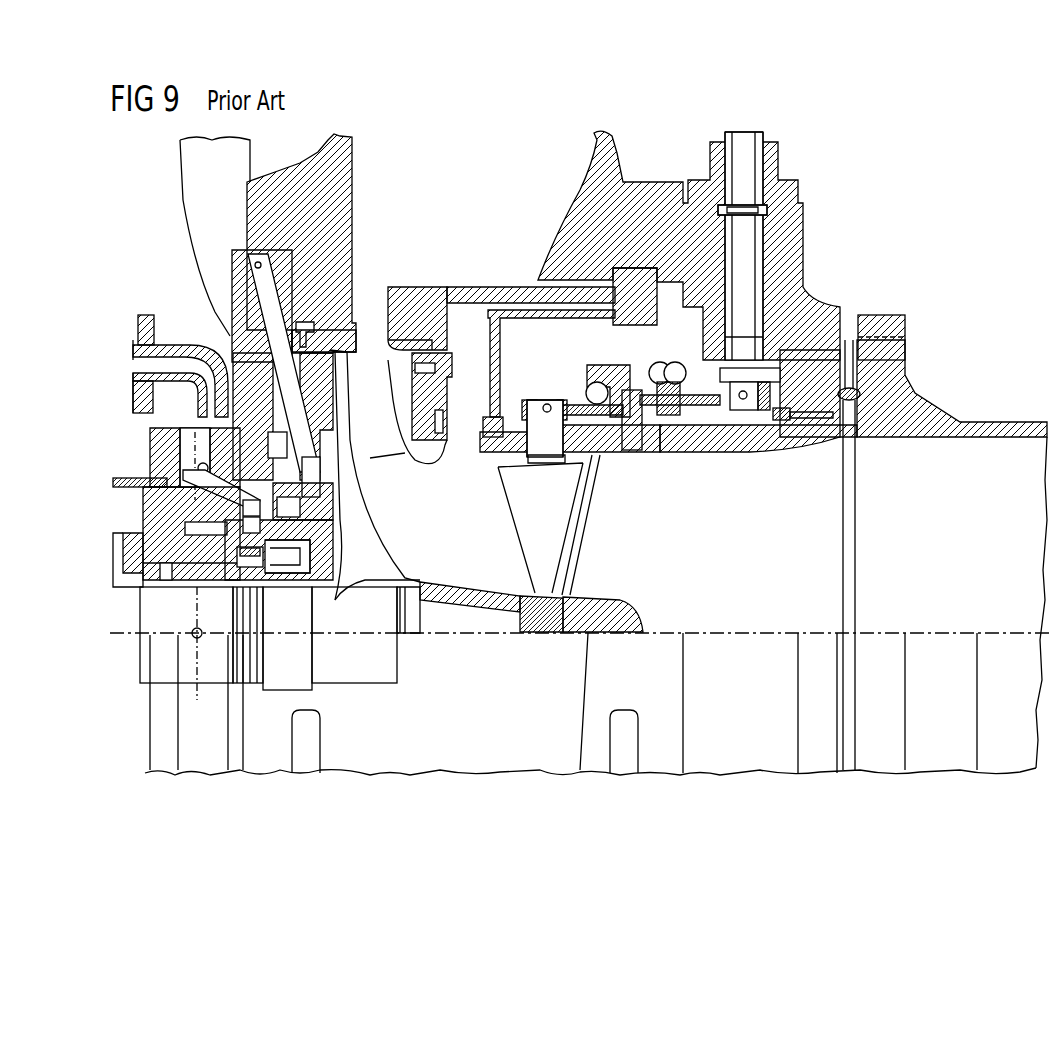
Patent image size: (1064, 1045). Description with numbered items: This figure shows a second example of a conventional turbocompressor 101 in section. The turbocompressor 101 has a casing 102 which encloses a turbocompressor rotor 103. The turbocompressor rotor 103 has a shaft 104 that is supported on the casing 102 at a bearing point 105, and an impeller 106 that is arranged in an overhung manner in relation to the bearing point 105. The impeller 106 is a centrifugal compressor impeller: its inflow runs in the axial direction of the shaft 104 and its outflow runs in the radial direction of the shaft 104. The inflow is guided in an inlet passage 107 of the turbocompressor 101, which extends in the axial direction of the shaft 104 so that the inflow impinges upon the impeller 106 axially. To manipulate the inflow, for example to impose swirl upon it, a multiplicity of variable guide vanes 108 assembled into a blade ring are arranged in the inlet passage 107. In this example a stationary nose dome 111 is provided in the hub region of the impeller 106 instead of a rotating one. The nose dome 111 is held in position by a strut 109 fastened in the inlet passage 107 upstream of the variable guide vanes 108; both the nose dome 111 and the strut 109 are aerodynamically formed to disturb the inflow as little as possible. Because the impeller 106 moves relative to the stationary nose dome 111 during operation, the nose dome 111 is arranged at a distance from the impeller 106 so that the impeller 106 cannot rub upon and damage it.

The turbocompressor 101 is at (886, 262).
The casing 102 is at (918, 407).
The turbocompressor rotor 103 is at (401, 687).
The shaft 104 is at (388, 657).
The bearing point 105 is at (203, 686).
The impeller 106 is at (355, 463).
The inlet passage 107 is at (788, 549).
The variable guide vanes 108 is at (522, 512).
The strut 109 is at (633, 513).
The stationary nose dome 111 is at (637, 618).